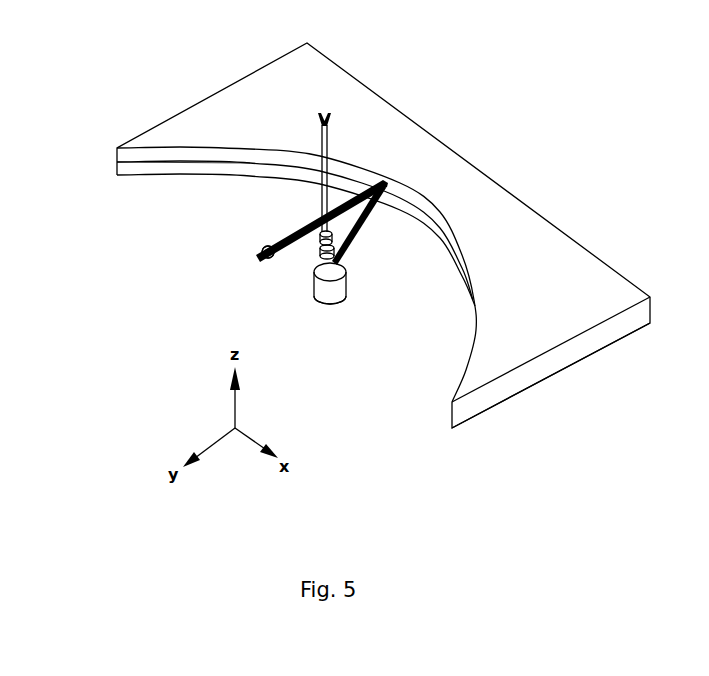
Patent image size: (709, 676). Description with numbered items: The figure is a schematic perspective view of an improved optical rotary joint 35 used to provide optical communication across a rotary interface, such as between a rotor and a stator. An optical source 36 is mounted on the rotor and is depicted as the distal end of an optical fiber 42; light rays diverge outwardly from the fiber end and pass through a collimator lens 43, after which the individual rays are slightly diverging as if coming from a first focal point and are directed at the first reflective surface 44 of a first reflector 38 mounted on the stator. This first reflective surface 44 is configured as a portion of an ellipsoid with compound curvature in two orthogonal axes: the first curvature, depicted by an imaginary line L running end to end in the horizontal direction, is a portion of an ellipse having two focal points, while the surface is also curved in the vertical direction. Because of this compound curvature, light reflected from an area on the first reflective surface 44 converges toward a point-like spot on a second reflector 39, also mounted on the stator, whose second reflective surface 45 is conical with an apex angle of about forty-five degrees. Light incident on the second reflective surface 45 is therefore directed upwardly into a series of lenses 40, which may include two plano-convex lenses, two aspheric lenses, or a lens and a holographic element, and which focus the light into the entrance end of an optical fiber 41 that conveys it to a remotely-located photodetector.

The optical rotary joint 35 is at (449, 100).
The optical source 36 is at (250, 262).
The first reflector 38 is at (236, 112).
The second reflector 39 is at (318, 303).
The series of lenses 40 is at (312, 260).
The optical fiber 41 is at (333, 144).
The optical fiber 42 is at (262, 258).
The collimator lens 43 is at (272, 240).
The first reflective surface 44 is at (257, 174).
The second reflective surface 45 is at (347, 263).
The imaginary line L is at (167, 166).